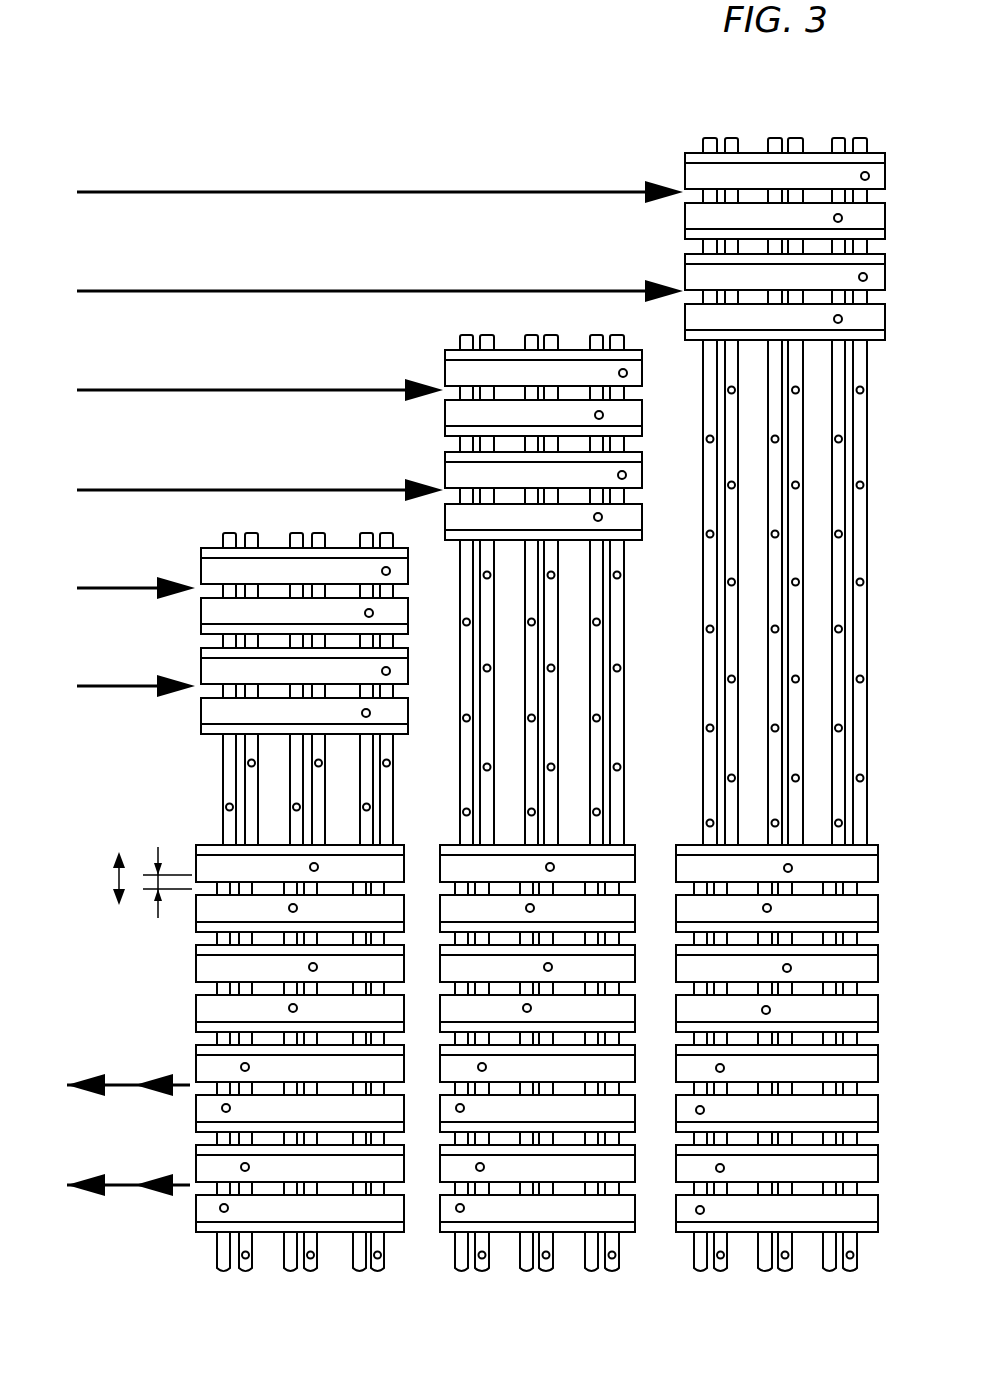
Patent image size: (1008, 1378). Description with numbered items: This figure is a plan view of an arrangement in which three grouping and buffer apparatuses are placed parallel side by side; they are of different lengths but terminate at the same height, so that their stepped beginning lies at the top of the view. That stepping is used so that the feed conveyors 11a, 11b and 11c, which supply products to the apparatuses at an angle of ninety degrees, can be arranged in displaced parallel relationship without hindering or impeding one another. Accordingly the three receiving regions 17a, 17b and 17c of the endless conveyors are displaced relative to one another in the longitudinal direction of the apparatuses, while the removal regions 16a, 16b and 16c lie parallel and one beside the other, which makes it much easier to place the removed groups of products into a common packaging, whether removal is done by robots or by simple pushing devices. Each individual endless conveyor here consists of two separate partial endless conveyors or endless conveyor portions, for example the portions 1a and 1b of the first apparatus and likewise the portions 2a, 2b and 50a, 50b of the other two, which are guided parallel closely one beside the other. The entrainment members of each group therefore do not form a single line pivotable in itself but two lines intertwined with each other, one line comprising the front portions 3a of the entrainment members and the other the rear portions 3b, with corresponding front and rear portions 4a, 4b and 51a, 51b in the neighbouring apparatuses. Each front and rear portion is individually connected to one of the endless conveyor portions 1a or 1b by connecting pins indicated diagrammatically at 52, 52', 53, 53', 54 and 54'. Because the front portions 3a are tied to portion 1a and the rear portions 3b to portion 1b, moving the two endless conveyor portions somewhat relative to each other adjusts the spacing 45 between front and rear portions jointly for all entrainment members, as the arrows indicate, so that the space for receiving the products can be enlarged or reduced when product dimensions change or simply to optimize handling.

The endless conveyor portion 1a is at (216, 1250).
The endless conveyor portion 1b is at (252, 1252).
The rail 2a is at (290, 1258).
The rail 2b is at (312, 1252).
The front portion of entrainment member 3a is at (196, 1002).
The rear portion of entrainment member 3b is at (196, 951).
The bar 4a is at (639, 417).
The bar 4b is at (639, 375).
The feed conveyor 11a is at (110, 685).
The feed conveyor 11b is at (162, 489).
The feed conveyor 11c is at (168, 290).
The removal region 16a is at (166, 1216).
The removal region 16b is at (633, 1256).
The removal region 16c is at (680, 1256).
The receiving region 17a is at (185, 552).
The receiving region 17b is at (422, 357).
The receiving region 17c is at (674, 162).
The spacing 45 is at (180, 878).
The rail 50a is at (357, 1258).
The rail 50b is at (385, 1255).
The bar 51a is at (878, 322).
The bar 51b is at (880, 276).
The connecting pin 52 is at (199, 789).
The connecting pin 52' is at (414, 789).
The connecting pin 53 is at (446, 690).
The connecting pin 53' is at (648, 690).
The connecting pin 54 is at (688, 590).
The connecting pin 54' is at (884, 590).